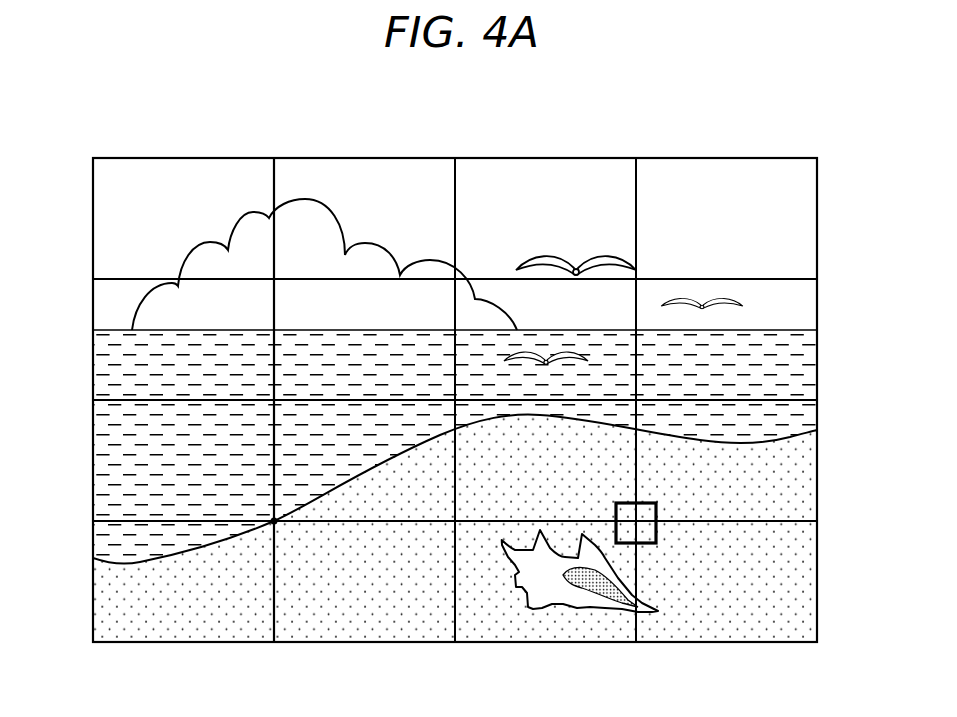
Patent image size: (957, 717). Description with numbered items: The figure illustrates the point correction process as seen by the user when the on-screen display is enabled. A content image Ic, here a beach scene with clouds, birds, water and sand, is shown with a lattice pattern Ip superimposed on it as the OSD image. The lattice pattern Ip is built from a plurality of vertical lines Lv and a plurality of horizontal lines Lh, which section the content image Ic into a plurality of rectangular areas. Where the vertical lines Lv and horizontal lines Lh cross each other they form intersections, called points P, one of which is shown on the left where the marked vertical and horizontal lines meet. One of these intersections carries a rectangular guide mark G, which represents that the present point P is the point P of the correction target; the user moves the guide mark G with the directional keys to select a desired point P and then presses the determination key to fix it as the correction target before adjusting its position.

The lattice pattern Ip is at (463, 385).
The content image Ic is at (698, 170).
The horizontal lines Lh is at (103, 520).
The vertical lines Lv is at (277, 633).
The point P is at (272, 519).
The guide mark G is at (659, 540).